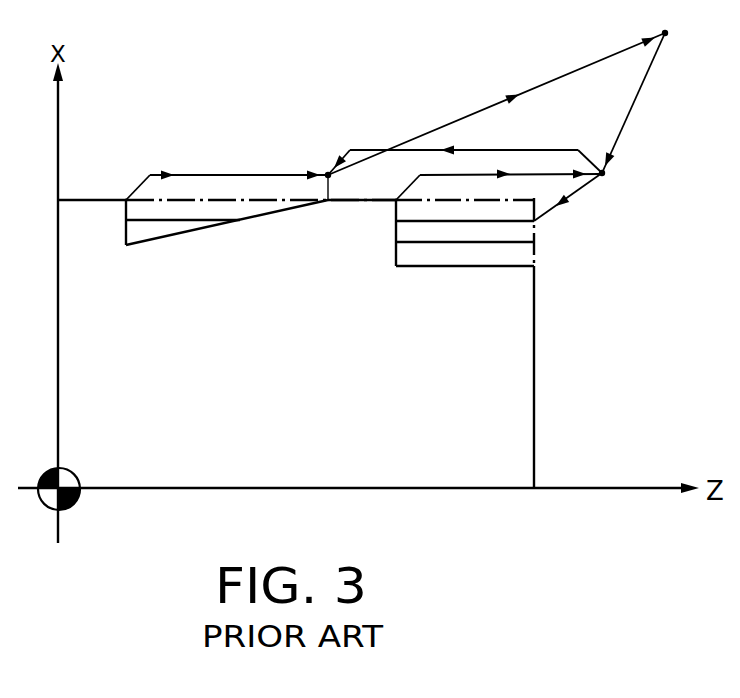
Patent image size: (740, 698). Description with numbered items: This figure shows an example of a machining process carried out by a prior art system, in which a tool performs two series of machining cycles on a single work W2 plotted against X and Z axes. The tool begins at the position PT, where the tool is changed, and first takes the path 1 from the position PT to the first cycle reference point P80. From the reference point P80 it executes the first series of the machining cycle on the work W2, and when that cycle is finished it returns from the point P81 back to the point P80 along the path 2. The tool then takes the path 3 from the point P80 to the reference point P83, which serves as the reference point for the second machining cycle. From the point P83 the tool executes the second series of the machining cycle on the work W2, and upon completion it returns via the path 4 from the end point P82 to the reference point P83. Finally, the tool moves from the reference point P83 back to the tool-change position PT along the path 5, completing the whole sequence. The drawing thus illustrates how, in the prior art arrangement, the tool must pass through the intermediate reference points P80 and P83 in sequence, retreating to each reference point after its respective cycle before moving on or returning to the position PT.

The work W2 is at (534, 383).
The position where the tool is changed PT is at (683, 36).
The first cycle reference point P80 is at (626, 184).
The end point of the first machining cycle P81 is at (371, 220).
The end point of the second machining cycle P82 is at (108, 187).
The reference point for the second machining cycle P83 is at (314, 173).
The path from PT to P80 1 is at (599, 127).
The return path from P81 to P80 2 is at (499, 175).
The path from P80 to P83 3 is at (465, 148).
The return path from P82 to P83 4 is at (227, 174).
The path from P83 to PT 5 is at (496, 104).